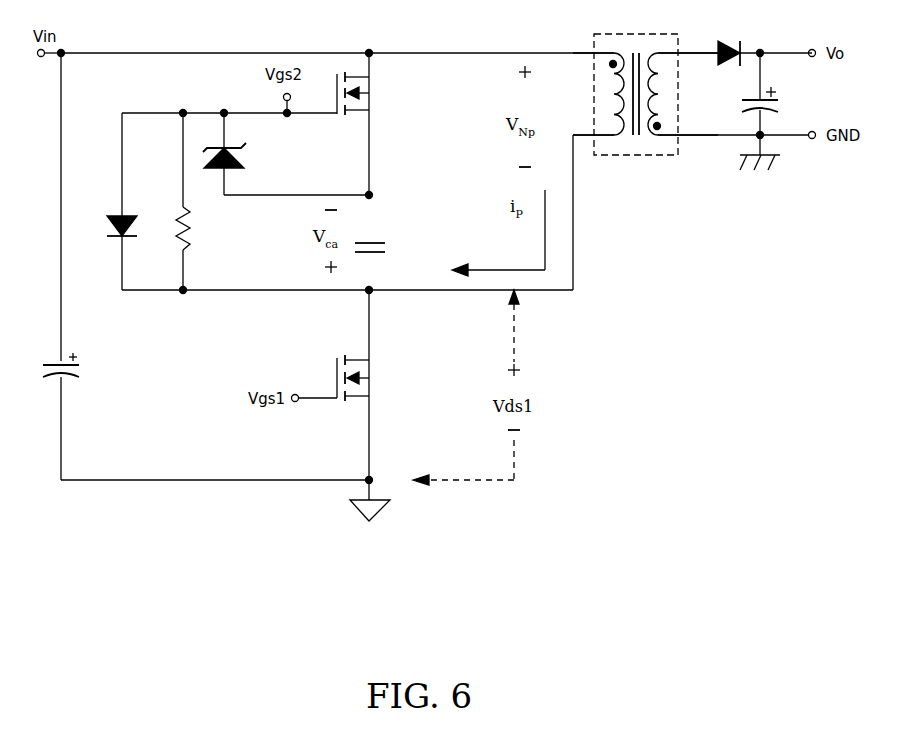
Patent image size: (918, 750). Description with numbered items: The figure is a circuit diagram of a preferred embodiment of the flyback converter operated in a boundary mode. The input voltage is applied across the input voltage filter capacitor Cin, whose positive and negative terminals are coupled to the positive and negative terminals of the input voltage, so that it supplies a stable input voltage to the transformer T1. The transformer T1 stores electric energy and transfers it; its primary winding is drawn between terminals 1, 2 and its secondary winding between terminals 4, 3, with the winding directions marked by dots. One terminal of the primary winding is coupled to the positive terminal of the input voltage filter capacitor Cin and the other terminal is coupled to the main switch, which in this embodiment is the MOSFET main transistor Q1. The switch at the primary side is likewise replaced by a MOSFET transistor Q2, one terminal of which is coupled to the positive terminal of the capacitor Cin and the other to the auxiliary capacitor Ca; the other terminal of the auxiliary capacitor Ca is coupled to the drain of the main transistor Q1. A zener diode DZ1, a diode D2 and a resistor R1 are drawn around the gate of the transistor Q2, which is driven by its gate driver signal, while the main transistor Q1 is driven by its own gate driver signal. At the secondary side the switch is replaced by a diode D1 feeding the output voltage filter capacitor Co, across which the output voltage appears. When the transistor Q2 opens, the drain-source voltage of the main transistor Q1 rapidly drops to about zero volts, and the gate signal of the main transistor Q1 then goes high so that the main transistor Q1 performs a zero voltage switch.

The main transistor Q1 is at (371, 385).
The transistor at the primary side Q2 is at (371, 126).
The zener diode DZ1 is at (286, 154).
The diode D2 is at (134, 227).
The resistor R1 is at (199, 201).
The auxiliary capacitor Ca is at (382, 237).
The input voltage filter capacitor Cin is at (74, 367).
The transformer T1 is at (677, 86).
The diode D1 is at (765, 40).
The output voltage filter capacitor Co is at (771, 104).
The transformer primary terminal 1 is at (591, 44).
The transformer primary terminal 2 is at (591, 126).
The transformer secondary terminal 3 is at (688, 126).
The transformer secondary terminal 4 is at (688, 44).